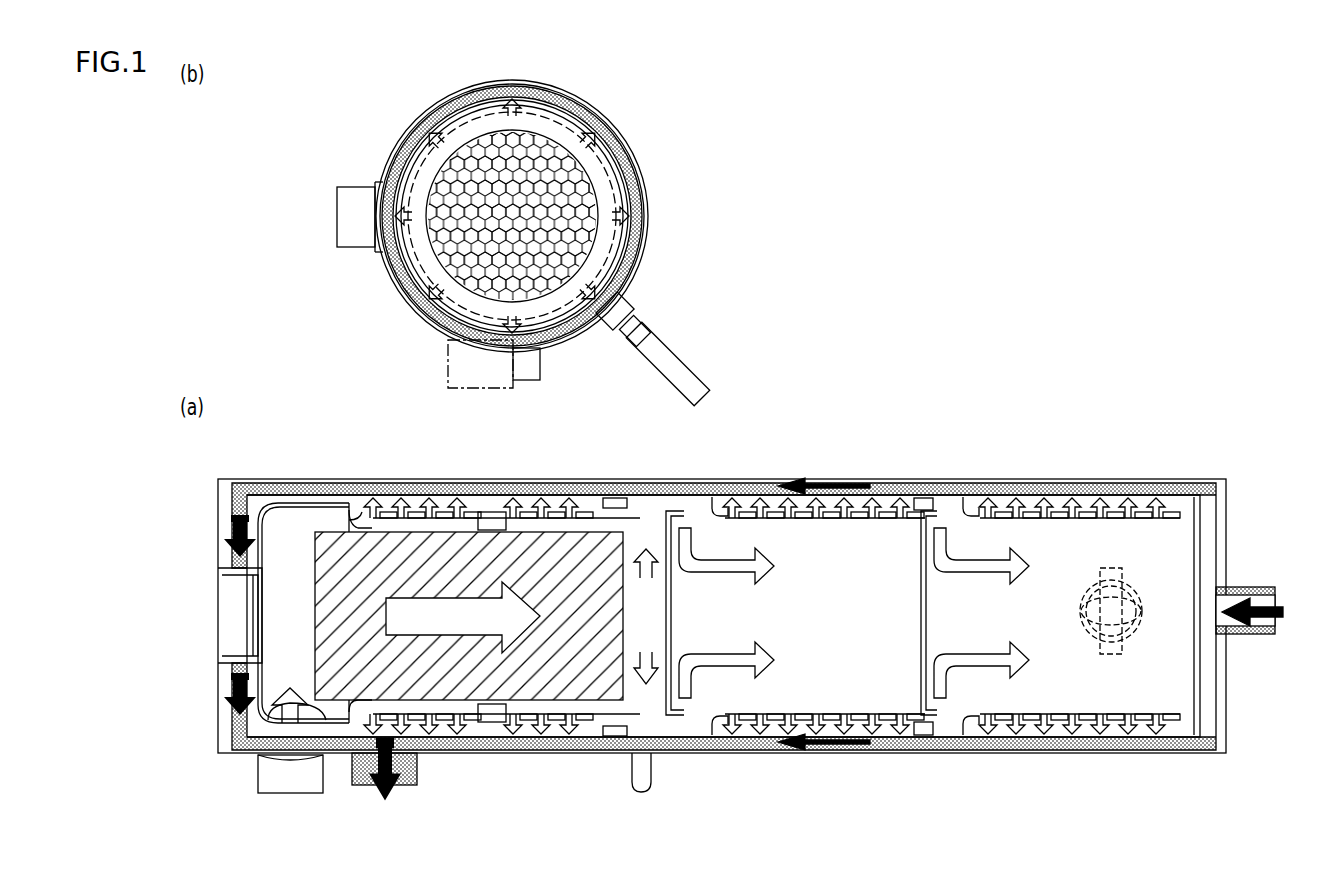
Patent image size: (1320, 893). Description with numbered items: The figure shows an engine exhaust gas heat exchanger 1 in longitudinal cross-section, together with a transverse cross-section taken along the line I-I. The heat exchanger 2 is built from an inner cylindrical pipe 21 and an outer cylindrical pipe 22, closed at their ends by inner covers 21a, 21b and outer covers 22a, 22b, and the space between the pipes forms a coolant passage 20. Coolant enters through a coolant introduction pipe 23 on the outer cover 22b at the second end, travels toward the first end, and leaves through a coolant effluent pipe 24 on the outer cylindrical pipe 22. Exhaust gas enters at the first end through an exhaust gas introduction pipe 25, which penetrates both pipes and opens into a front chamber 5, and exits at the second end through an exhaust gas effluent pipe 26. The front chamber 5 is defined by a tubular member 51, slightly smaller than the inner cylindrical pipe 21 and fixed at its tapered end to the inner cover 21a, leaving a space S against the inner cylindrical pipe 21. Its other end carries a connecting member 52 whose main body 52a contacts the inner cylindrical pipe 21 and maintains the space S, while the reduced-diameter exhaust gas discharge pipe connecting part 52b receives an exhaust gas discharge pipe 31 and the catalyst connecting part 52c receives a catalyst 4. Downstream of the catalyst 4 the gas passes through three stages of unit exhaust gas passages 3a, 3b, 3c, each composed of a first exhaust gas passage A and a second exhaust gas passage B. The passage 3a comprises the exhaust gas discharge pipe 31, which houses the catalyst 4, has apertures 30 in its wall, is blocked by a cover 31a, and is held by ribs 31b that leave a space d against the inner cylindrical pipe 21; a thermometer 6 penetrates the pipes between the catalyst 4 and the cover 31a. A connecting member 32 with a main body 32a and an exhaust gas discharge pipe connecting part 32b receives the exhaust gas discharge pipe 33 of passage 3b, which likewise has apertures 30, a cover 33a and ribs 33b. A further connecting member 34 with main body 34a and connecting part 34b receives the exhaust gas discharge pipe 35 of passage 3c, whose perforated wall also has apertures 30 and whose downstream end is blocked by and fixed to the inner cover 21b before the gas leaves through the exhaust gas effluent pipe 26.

The engine exhaust gas heat exchanger 1 is at (240, 102).
The heat exchanger 2 is at (648, 190).
The unit exhaust gas passage 3a is at (720, 200).
The unit exhaust gas passage 3b is at (785, 805).
The unit exhaust gas passage 3c is at (1070, 805).
The catalyst 4 is at (460, 278).
The front chamber 5 is at (292, 515).
The thermometer 6 is at (636, 322).
The coolant passage 20 is at (590, 104).
The inner cylindrical pipe 21 is at (612, 148).
The inner cover 21a is at (232, 690).
The inner cover 21b is at (1212, 680).
The outer cylindrical pipe 22 is at (600, 128).
The outer cover 22a is at (230, 550).
The outer cover 22b is at (1225, 522).
The coolant introduction pipe 23 is at (1250, 590).
The coolant effluent pipe 24 is at (540, 365).
The exhaust gas introduction pipe 25 is at (448, 375).
The exhaust gas effluent pipe 26 is at (352, 178).
The apertures 30 is at (420, 512).
The exhaust gas discharge pipe 31 is at (430, 122).
The cover 31a is at (667, 513).
The ribs 31b is at (505, 105).
The connecting member 32 is at (700, 500).
The main body 32a is at (690, 510).
The exhaust gas discharge pipe connecting part 32b is at (714, 505).
The exhaust gas discharge pipe 33 is at (810, 500).
The cover 33a is at (921, 585).
The ribs 33b is at (921, 500).
The connecting member 34 is at (947, 500).
The main body 34a is at (940, 505).
The exhaust gas discharge pipe connecting part 34b is at (969, 505).
The exhaust gas discharge pipe 35 is at (1076, 500).
The tubular member 51 is at (288, 497).
The connecting member 52 is at (366, 755).
The main body 52a is at (352, 520).
The exhaust gas discharge pipe connecting part 52b is at (357, 510).
The catalyst connecting part 52c is at (362, 525).
The first exhaust gas passage A is at (630, 232).
The second exhaust gas passage B is at (625, 245).
The space S is at (268, 498).
The space d is at (503, 500).
The line I- I is at (488, 433).